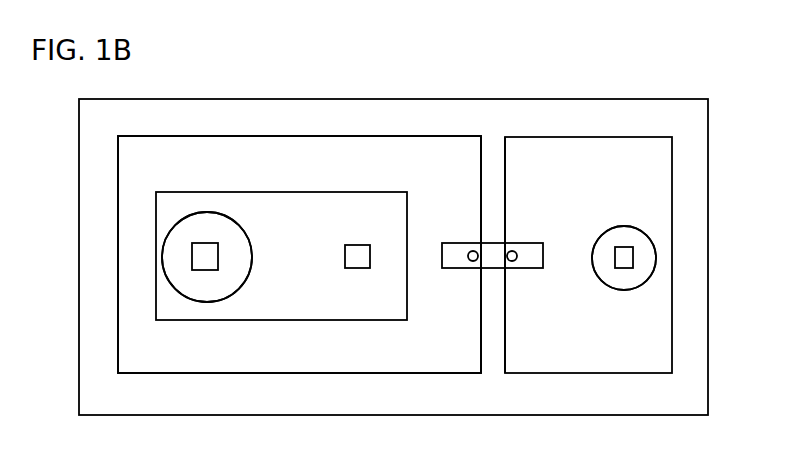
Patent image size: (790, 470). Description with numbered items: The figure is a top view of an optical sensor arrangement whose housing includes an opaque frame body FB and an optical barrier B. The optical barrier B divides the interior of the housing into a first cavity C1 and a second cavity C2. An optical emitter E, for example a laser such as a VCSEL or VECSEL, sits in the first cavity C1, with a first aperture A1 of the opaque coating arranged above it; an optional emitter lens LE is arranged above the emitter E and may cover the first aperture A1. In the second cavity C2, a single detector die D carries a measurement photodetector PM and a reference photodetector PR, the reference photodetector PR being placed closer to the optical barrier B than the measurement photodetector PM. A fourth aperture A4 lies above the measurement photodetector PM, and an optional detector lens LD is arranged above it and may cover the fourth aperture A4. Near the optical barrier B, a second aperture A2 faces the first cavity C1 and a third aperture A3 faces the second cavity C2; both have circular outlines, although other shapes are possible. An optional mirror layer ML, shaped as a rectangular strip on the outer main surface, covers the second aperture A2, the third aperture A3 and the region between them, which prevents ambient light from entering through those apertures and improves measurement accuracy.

The frame body FB is at (299, 242).
The second cavity C2 is at (299, 254).
The first cavity C1 is at (588, 255).
The optical barrier B is at (493, 255).
The detector die D is at (281, 256).
The mirror layer ML is at (452, 250).
The third aperture A3 is at (472, 261).
The second aperture A2 is at (513, 261).
The fourth aperture A4 is at (247, 250).
The detector lens LD is at (237, 289).
The measurement photodetector PM is at (205, 262).
The reference photodetector PR is at (360, 263).
The emitter lens LE is at (607, 228).
The first aperture A1 is at (642, 235).
The optical emitter E is at (624, 257).